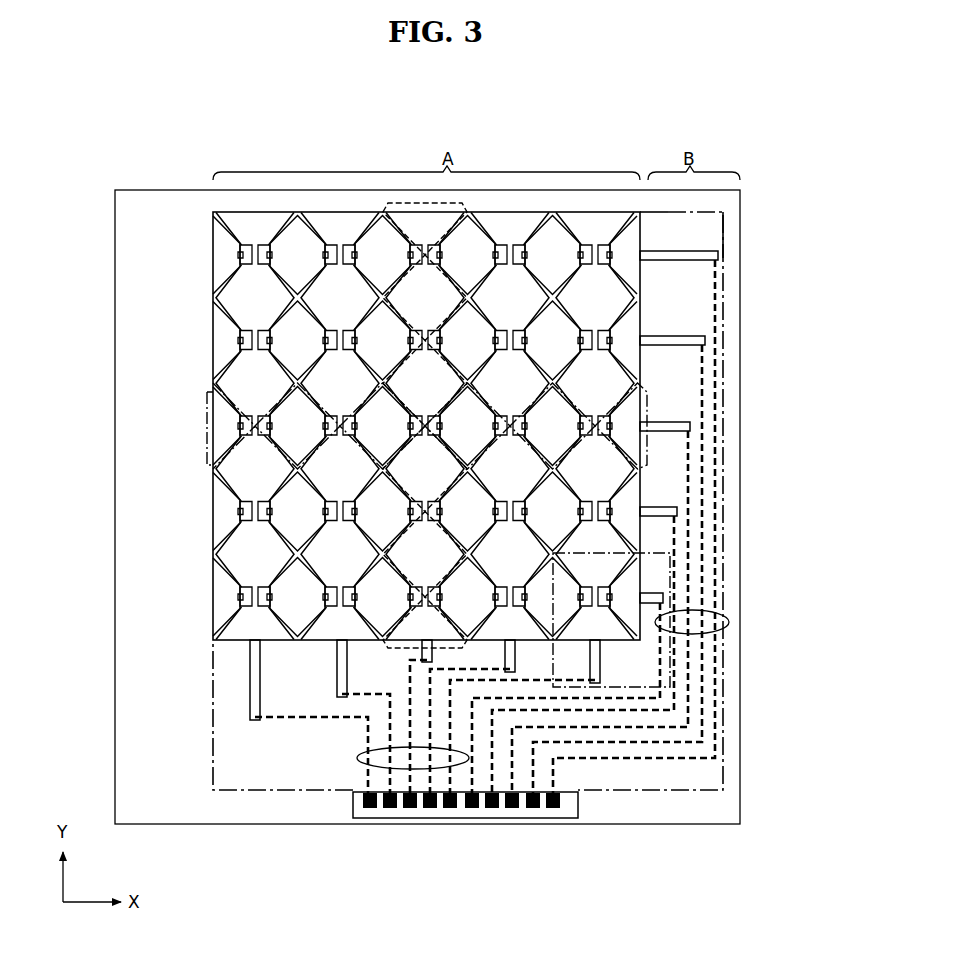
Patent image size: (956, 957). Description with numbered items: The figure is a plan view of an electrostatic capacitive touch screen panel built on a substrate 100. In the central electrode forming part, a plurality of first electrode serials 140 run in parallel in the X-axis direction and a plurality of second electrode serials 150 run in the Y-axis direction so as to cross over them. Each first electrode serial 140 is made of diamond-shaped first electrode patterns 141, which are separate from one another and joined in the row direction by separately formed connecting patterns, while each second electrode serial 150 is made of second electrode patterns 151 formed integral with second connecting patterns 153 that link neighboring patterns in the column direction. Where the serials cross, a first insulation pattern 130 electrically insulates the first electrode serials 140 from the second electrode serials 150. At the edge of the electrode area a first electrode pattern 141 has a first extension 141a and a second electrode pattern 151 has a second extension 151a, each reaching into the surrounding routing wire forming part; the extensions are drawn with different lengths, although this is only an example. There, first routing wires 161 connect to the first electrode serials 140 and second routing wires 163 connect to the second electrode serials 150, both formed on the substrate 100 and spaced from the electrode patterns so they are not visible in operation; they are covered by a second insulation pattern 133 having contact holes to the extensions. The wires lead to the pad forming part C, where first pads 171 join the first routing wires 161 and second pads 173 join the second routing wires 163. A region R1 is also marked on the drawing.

The substrate 100 is at (723, 803).
The first insulation pattern 130 is at (623, 315).
The second insulation pattern 133 is at (713, 225).
The first electrode serial 140 is at (205, 425).
The first electrode pattern 141 is at (297, 240).
The first extension 141a is at (673, 252).
The second electrode serial 150 is at (428, 202).
The second electrode pattern 151 is at (598, 225).
The second extension 151a is at (597, 662).
The second connecting pattern 153 is at (602, 328).
The first routing wire 161 is at (729, 622).
The second routing wire 163 is at (357, 757).
The first pad 171 is at (551, 810).
The second pad 173 is at (450, 810).
The region R1 is at (616, 688).
The pad forming part C is at (347, 801).